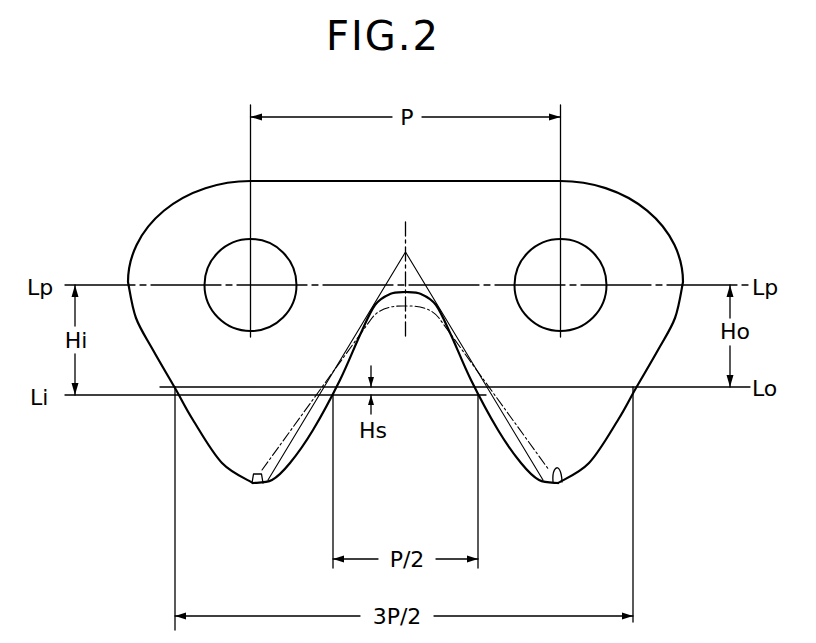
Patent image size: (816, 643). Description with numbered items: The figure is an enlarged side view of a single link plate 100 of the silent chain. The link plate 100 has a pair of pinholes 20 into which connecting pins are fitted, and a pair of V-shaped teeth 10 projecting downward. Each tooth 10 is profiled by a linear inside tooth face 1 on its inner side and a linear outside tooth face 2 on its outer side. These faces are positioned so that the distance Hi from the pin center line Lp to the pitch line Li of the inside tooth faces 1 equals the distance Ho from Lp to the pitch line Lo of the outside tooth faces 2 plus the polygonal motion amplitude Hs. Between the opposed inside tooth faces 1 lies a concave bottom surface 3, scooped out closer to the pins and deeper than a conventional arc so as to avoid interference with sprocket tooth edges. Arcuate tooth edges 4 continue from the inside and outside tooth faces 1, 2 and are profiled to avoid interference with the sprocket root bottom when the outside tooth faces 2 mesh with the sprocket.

The link plate 100 is at (592, 170).
The pinhole 20 is at (218, 259).
The V-shaped tooth 10 is at (411, 412).
The inside tooth face 1 is at (509, 448).
The outside tooth face 2 is at (588, 465).
The concave bottom surface 3 is at (419, 296).
The tooth edge 4 is at (264, 484).